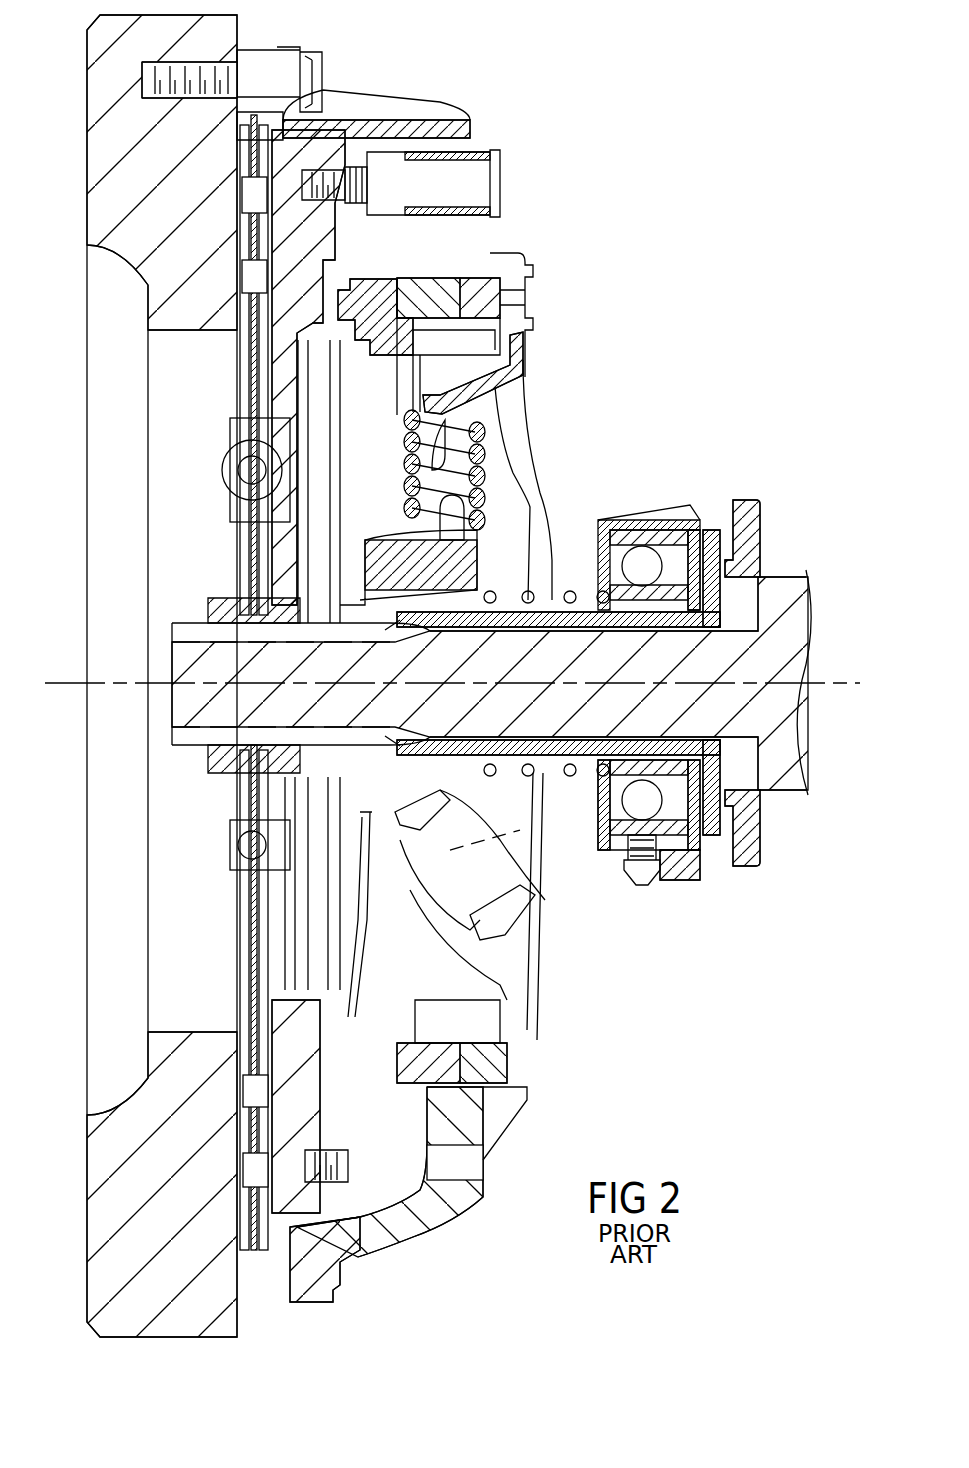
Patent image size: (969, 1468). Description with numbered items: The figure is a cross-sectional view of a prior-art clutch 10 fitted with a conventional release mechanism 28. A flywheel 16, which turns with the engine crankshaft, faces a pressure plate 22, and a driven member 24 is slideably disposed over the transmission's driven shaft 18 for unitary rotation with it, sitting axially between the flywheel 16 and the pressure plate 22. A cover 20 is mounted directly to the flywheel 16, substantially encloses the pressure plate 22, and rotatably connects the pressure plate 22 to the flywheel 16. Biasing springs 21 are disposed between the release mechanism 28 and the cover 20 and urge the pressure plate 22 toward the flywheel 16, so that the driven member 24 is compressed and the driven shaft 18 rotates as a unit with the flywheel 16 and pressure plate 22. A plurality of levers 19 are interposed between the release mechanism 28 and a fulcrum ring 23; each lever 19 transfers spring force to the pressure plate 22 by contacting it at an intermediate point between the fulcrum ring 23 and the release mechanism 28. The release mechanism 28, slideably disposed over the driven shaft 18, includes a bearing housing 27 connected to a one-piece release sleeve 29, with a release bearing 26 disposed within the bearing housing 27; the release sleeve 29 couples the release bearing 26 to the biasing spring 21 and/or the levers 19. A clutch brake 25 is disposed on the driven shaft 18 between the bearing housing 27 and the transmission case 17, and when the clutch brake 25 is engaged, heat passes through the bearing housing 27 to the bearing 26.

The clutch 10 is at (671, 351).
The flywheel 16 is at (100, 145).
The transmission case 17 is at (752, 505).
The driven shaft 18 is at (190, 624).
The levers 19 is at (360, 957).
The cover 20 is at (432, 128).
The biasing spring 21 is at (527, 890).
The pressure plate 22 is at (307, 240).
The fulcrum ring 23 is at (383, 1030).
The driven member 24 is at (288, 150).
The clutch brake 25 is at (712, 552).
The release bearing 26 is at (653, 828).
The bearing housing 27 is at (677, 853).
The release mechanism 28 is at (673, 462).
The release sleeve 29 is at (560, 605).